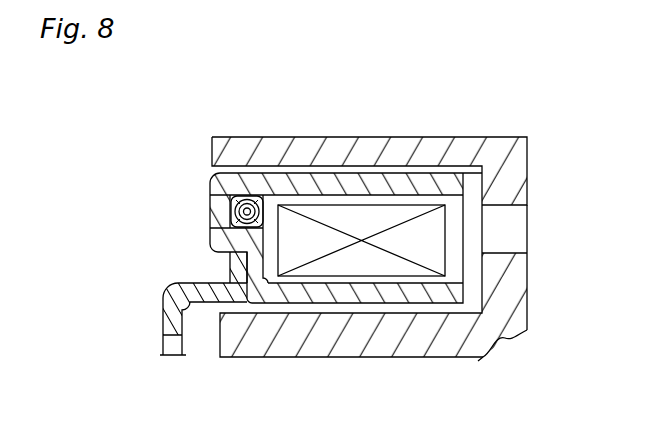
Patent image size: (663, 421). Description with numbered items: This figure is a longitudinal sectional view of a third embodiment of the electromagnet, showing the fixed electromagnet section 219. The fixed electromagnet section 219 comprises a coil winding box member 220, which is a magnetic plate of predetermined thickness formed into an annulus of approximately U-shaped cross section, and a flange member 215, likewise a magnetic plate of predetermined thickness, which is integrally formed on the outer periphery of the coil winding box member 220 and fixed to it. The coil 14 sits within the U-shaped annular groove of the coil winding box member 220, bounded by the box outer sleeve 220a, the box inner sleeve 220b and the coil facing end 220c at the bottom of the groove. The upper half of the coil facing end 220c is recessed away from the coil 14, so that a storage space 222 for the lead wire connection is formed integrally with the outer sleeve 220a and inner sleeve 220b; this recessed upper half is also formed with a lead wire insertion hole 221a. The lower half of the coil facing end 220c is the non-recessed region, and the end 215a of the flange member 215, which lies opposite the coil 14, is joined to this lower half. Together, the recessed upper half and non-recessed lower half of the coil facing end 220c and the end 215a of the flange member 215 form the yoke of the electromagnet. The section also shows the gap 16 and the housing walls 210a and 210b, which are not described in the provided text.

The coil 14 is at (420, 210).
The gap 16 is at (253, 220).
The housing upper wall 210a is at (342, 146).
The housing lower wall 210b is at (488, 340).
The flange member 215 is at (163, 327).
The end of flange member 215a is at (230, 273).
The fixed electromagnet section 219 is at (98, 75).
The coil winding box member 220 is at (324, 170).
The box outer sleeve 220a is at (388, 176).
The box inner sleeve 220b is at (463, 294).
The coil facing end 220c is at (217, 238).
The lead wire insertion hole 221a is at (212, 210).
The storage space 222 is at (228, 197).